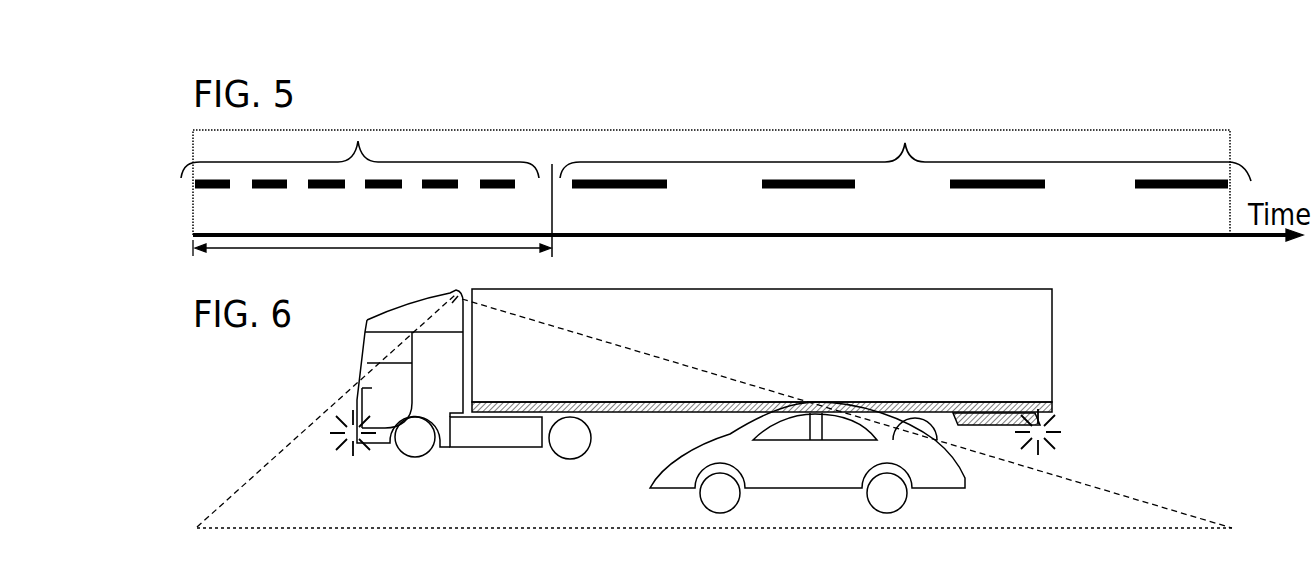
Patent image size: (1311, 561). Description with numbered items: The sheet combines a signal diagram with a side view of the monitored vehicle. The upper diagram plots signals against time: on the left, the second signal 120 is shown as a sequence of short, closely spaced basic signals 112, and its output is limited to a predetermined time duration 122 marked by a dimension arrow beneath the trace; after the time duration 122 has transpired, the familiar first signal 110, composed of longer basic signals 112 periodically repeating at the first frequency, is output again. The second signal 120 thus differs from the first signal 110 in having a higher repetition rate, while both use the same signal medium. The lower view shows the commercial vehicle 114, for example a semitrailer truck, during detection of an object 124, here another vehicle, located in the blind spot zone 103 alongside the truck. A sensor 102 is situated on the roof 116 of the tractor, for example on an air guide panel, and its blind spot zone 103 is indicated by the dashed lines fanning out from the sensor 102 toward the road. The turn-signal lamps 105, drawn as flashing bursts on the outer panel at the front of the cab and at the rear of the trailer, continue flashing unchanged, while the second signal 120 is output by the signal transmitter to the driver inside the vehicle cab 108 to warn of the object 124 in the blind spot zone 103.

In FIG. 6, the sensor 102 is at (452, 303).
In FIG. 6, the blind spot zone 103 is at (1098, 513).
In FIG. 6, the turn-signal lamp 105 is at (355, 457).
In FIG. 6, the vehicle cab 108 is at (372, 388).
In FIG. 5, the first signal 110 is at (905, 143).
In FIG. 5, the basic signal 112 is at (500, 178).
In FIG. 6, the commercial vehicle 114 is at (630, 365).
In FIG. 6, the roof 116 is at (399, 296).
In FIG. 5, the second signal 120 is at (358, 141).
In FIG. 5, the time duration 122 is at (288, 250).
In FIG. 6, the object 124 is at (672, 476).